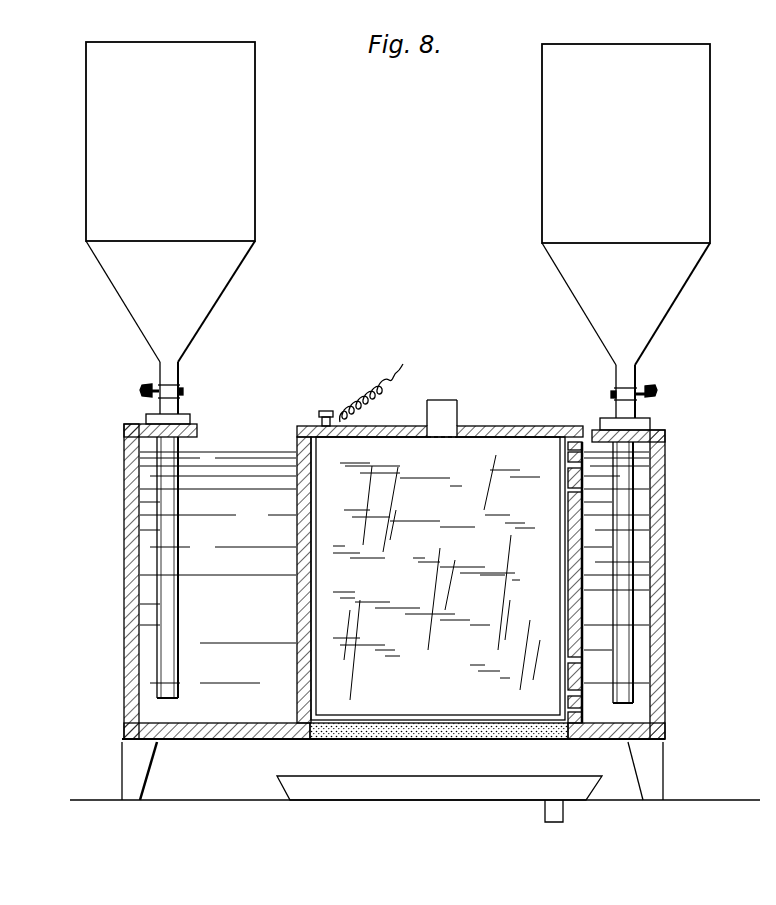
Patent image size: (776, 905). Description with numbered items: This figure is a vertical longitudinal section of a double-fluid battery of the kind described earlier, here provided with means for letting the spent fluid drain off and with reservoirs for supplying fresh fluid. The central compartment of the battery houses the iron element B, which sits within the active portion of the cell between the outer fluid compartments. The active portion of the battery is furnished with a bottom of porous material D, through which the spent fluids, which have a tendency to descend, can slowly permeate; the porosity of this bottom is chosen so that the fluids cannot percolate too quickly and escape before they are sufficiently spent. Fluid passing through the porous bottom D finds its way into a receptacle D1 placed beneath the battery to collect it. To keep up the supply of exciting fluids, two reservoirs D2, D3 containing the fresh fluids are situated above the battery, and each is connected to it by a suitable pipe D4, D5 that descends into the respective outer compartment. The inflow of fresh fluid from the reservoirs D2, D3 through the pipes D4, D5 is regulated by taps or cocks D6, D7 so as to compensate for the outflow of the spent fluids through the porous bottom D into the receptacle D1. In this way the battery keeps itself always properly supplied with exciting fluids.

The iron element B is at (392, 588).
The bottom of porous material D is at (432, 736).
The receptacle D1 is at (439, 798).
The reservoir D2 is at (170, 233).
The reservoir D3 is at (626, 237).
The pipe D4 is at (168, 608).
The pipe D5 is at (612, 572).
The tap or cock D6 is at (143, 389).
The tap or cock D7 is at (648, 394).